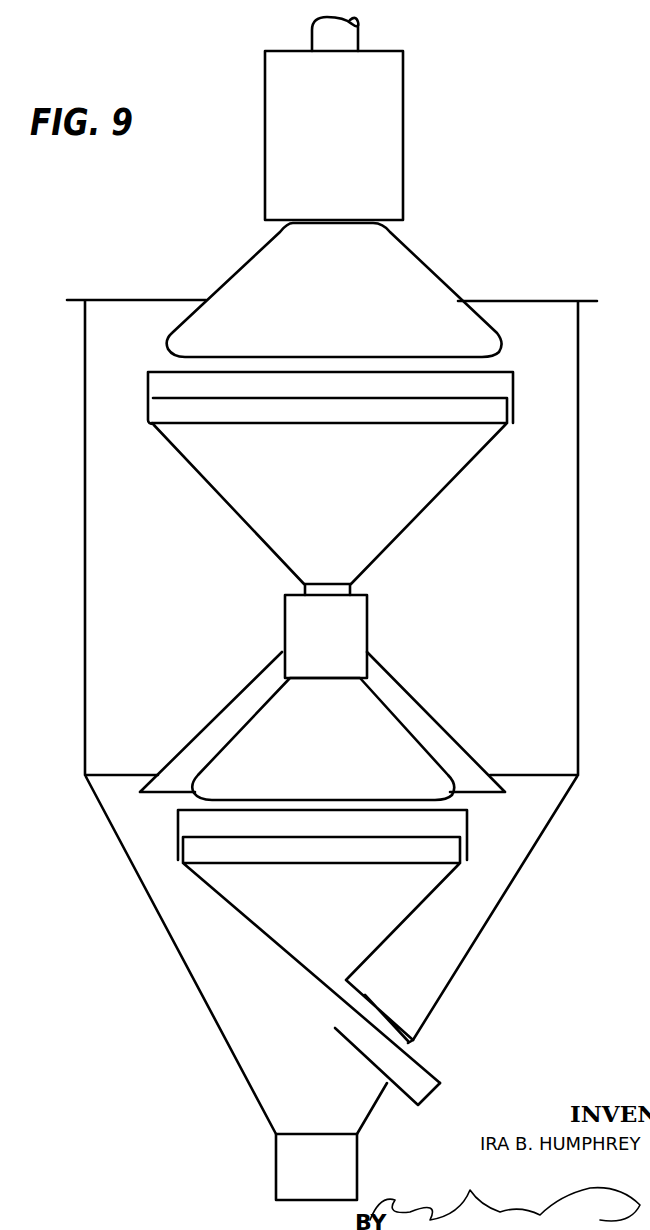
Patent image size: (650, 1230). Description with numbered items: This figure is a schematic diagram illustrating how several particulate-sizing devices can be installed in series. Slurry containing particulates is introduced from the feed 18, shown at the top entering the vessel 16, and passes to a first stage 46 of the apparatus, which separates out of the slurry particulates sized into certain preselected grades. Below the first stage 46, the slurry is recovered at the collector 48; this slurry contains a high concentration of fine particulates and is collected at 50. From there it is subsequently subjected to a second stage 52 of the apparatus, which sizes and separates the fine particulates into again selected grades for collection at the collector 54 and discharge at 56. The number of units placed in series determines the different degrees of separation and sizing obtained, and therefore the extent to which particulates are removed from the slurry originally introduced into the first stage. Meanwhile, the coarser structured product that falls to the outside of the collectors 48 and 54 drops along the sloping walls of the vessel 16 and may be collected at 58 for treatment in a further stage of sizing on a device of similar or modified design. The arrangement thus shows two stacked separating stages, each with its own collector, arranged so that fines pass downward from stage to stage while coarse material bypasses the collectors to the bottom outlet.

The feed hopper / supply container 16 is at (398, 140).
The feed 18 is at (358, 33).
The first stage 46 is at (411, 291).
The collector 48 is at (513, 380).
The collection point 50 is at (358, 626).
The second stage 52 is at (419, 740).
The collector 54 is at (455, 826).
The discharge 56 is at (427, 1077).
The collection point for coarser product 58 is at (345, 1180).